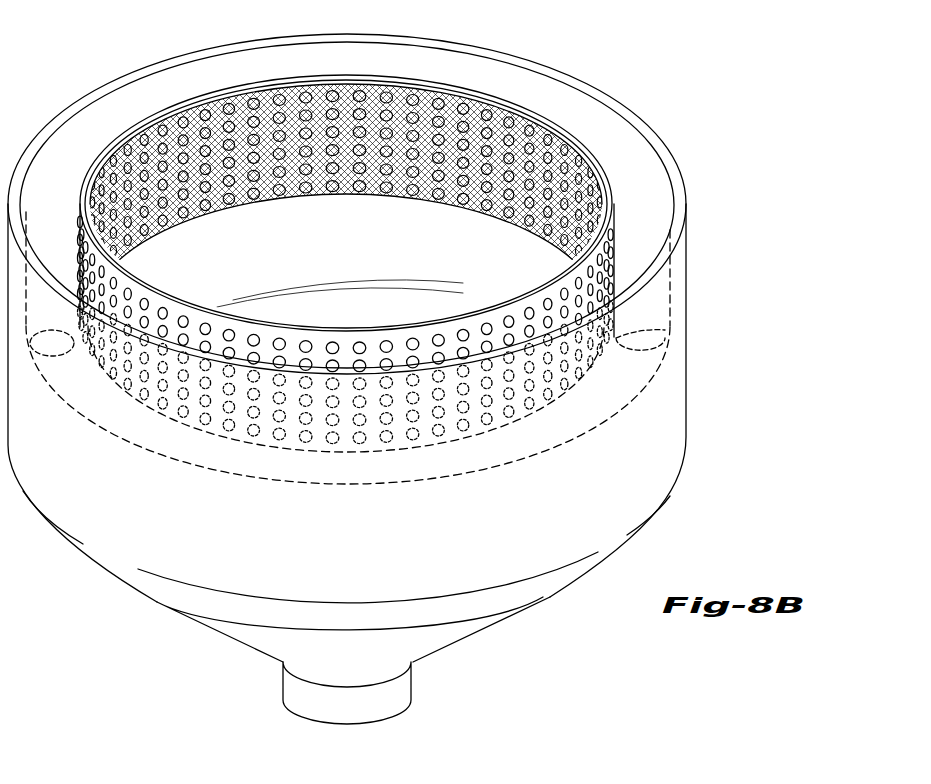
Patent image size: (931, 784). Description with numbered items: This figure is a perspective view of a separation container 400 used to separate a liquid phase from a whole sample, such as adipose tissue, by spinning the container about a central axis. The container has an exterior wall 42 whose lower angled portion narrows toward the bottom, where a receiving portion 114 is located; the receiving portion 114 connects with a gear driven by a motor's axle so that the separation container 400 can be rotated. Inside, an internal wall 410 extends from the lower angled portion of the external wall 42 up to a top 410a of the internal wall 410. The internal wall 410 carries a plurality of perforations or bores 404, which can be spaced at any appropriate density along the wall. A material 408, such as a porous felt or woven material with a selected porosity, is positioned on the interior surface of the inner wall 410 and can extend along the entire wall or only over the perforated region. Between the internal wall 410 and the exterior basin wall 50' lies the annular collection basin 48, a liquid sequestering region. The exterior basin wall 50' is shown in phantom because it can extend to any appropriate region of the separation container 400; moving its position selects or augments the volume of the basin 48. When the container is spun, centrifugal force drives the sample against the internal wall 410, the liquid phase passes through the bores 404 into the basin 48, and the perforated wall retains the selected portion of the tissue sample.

The separation container 400 is at (750, 183).
The exterior basin wall 50' is at (393, 318).
The exterior wall 42 is at (243, 633).
The receiving portion 114 is at (405, 690).
The annular collection basin 48 is at (50, 332).
The internal wall 410 is at (144, 125).
The top of the internal wall 410a is at (200, 100).
The bores 404 is at (334, 145).
The material 408 is at (407, 90).